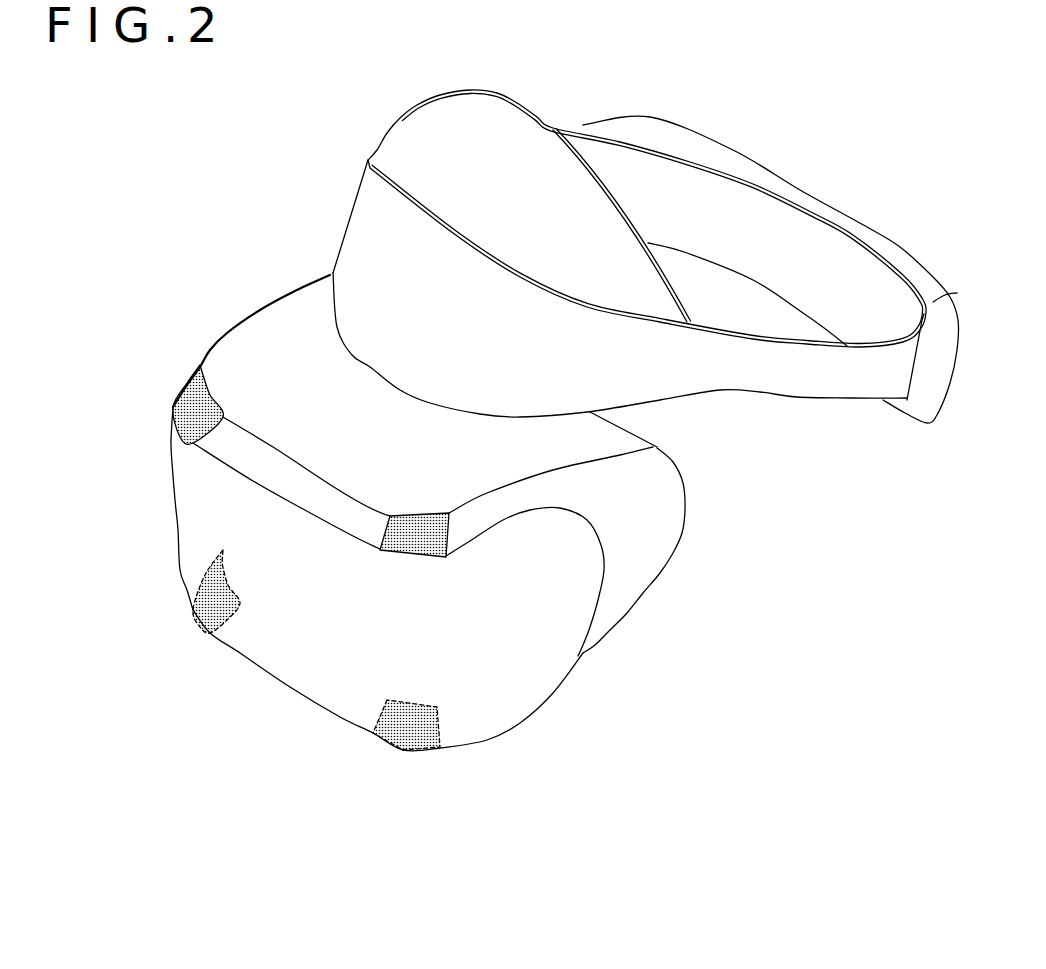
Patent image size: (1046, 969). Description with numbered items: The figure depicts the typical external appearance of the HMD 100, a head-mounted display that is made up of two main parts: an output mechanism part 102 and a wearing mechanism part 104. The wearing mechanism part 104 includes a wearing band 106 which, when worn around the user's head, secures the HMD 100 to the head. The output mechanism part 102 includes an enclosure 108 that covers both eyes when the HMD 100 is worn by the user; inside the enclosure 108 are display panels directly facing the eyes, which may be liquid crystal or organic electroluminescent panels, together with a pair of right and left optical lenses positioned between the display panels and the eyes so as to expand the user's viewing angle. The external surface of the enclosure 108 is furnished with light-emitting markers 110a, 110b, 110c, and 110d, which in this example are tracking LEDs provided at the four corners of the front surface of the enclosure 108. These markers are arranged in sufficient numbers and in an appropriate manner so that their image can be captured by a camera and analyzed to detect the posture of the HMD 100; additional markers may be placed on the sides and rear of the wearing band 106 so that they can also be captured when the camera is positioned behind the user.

The HMD 100 is at (515, 921).
The output mechanism part 102 is at (145, 455).
The wearing mechanism part 104 is at (851, 150).
The wearing band 106 is at (797, 397).
The enclosure 108 is at (543, 705).
The light-emitting marker 110a is at (197, 370).
The light-emitting marker 110b is at (417, 517).
The light-emitting marker 110c is at (210, 633).
The light-emitting marker 110d is at (397, 748).